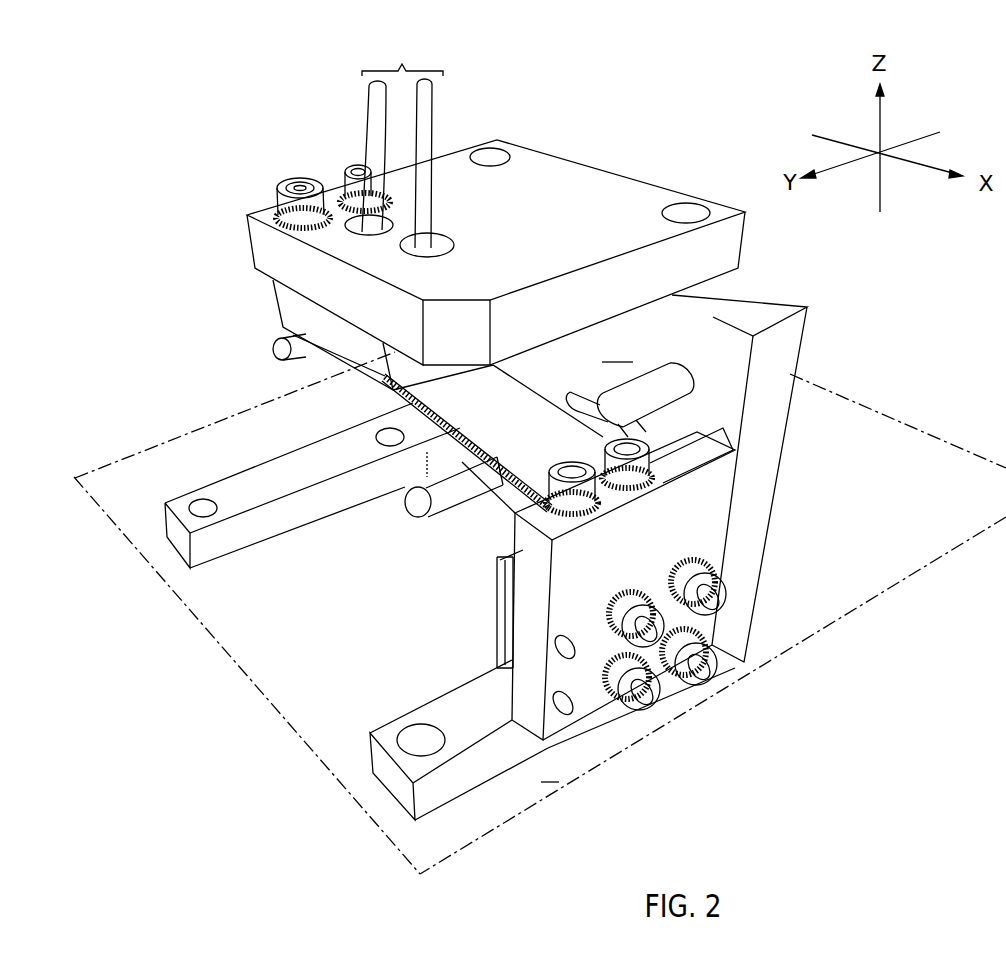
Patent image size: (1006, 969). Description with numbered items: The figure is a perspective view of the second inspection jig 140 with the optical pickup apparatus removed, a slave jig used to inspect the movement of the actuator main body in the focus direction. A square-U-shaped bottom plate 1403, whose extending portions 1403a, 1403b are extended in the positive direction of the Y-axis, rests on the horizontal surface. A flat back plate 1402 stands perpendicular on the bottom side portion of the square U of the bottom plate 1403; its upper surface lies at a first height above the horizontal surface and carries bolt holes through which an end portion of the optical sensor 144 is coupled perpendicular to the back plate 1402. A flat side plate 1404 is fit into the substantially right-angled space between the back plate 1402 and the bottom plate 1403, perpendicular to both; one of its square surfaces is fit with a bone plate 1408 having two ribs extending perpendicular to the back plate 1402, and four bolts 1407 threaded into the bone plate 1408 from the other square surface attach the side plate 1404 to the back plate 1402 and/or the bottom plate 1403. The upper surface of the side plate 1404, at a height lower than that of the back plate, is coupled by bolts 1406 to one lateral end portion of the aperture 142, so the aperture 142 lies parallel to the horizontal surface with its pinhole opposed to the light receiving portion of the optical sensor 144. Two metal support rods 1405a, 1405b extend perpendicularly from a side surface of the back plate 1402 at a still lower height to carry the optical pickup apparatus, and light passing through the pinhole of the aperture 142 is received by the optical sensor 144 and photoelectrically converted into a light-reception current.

The second inspection jig 140 is at (791, 418).
The aperture 142 is at (393, 380).
The optical sensor 144 is at (648, 184).
The back plate 1402 is at (803, 306).
The bottom plate 1403 is at (398, 784).
The extending portion 1403a is at (437, 793).
The extending portion 1403b is at (238, 550).
The side plate 1404 is at (514, 522).
The support rod 1405a is at (404, 516).
The support rod 1405b is at (274, 354).
The bolts 1406 is at (655, 500).
The bolts 1407 is at (700, 672).
The bone plate 1408 is at (498, 583).